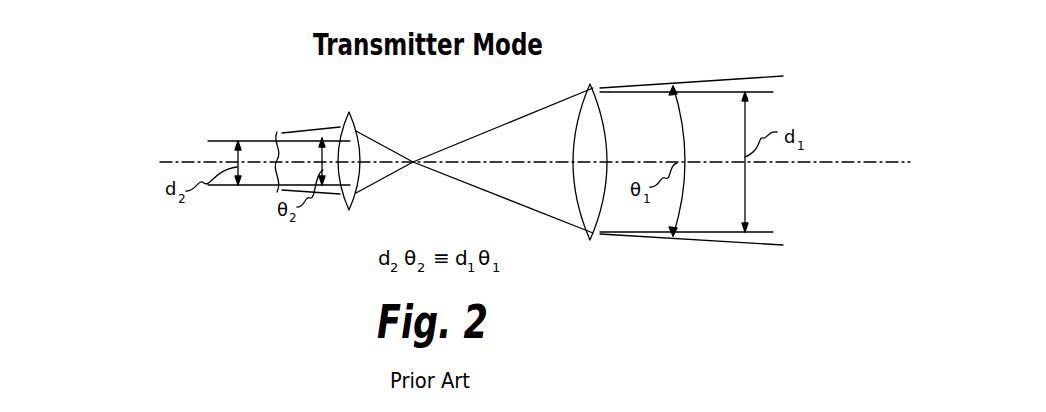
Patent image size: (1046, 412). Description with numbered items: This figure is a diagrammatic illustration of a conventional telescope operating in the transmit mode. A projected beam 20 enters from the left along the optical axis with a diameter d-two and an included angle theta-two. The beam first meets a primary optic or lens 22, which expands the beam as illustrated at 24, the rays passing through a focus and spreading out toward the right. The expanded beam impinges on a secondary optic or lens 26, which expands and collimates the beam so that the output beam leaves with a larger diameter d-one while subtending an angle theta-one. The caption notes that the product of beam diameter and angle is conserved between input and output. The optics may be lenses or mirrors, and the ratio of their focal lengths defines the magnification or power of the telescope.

The projected beam 20 is at (217, 132).
The primary optic or lens 22 is at (357, 132).
The expanded beam 24 is at (467, 135).
The secondary optic or lens 26 is at (595, 85).